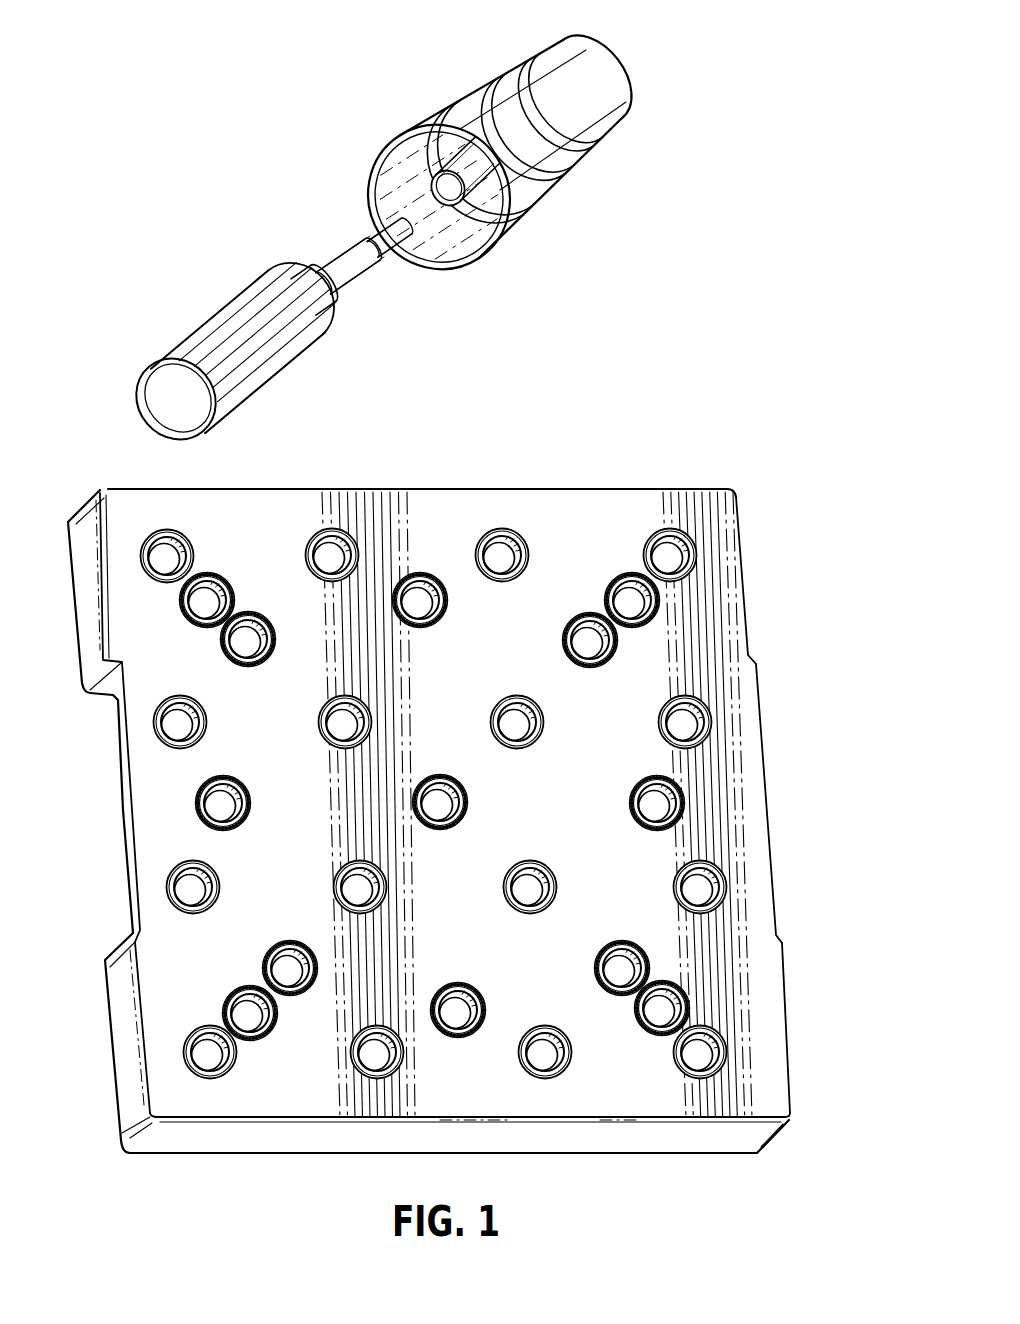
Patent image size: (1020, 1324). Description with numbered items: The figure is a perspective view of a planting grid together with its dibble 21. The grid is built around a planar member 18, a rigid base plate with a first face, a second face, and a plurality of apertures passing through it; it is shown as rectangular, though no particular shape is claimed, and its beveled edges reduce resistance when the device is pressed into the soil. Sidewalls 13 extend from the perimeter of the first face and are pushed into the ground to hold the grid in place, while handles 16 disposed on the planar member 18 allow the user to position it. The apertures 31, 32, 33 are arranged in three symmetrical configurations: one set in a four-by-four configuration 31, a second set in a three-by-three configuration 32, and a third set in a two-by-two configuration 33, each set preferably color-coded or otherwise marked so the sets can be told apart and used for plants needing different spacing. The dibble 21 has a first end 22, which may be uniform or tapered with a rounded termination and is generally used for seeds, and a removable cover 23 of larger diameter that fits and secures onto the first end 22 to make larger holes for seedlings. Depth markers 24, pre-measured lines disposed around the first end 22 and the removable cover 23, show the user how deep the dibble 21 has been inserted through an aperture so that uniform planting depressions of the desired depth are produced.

The sidewalls 13 is at (122, 1005).
The handles 16 is at (122, 790).
The planar member 18 is at (740, 792).
The dibble 21 is at (298, 191).
The first end 22 is at (318, 260).
The removable cover 23 is at (512, 86).
The depth markers 24 is at (382, 248).
The apertures in four-by-four configuration 31 is at (182, 528).
The apertures in three-by-three configuration 32 is at (213, 573).
The apertures in two-by-two configuration 33 is at (244, 614).